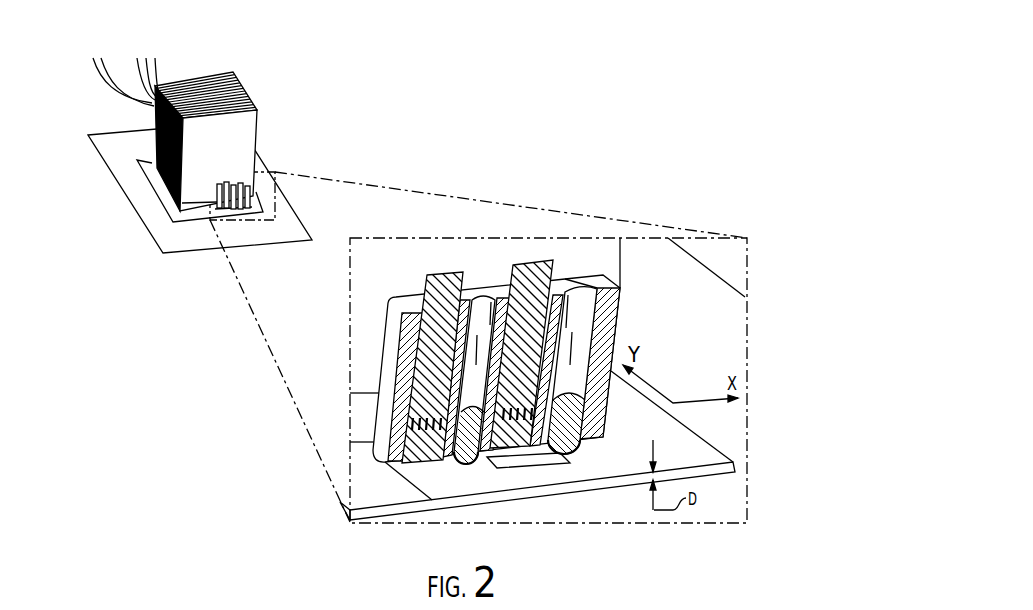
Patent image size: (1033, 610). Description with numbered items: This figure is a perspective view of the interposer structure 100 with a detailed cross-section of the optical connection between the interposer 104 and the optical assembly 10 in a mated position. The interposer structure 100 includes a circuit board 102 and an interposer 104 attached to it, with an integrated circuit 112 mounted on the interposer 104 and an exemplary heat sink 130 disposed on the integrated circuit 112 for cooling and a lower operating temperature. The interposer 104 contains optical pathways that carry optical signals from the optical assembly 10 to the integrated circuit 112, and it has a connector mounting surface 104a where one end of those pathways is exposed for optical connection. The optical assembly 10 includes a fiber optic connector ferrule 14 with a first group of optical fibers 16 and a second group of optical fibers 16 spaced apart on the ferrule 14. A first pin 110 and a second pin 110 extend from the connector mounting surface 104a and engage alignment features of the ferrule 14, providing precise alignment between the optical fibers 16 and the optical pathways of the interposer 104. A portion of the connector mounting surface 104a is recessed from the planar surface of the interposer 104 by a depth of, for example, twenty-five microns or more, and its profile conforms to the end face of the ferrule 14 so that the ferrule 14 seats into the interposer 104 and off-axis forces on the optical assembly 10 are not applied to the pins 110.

The optical assembly 10 is at (496, 360).
The fiber optic connector ferrule 14 is at (620, 298).
The optical fibers 16 is at (447, 270).
The interposer structure 100 is at (152, 199).
The circuit board 102 is at (184, 257).
The interposer 104 is at (710, 458).
The connector mounting surface 104a is at (598, 467).
The alignment pin 110 is at (469, 465).
The integrated circuit 112 is at (360, 412).
The heat sink 130 is at (250, 127).